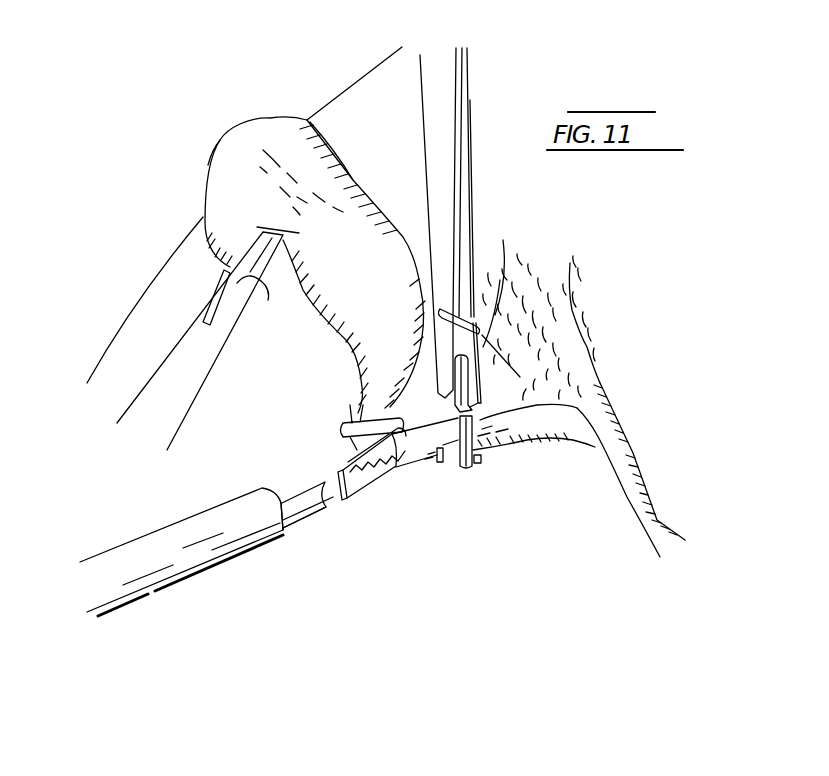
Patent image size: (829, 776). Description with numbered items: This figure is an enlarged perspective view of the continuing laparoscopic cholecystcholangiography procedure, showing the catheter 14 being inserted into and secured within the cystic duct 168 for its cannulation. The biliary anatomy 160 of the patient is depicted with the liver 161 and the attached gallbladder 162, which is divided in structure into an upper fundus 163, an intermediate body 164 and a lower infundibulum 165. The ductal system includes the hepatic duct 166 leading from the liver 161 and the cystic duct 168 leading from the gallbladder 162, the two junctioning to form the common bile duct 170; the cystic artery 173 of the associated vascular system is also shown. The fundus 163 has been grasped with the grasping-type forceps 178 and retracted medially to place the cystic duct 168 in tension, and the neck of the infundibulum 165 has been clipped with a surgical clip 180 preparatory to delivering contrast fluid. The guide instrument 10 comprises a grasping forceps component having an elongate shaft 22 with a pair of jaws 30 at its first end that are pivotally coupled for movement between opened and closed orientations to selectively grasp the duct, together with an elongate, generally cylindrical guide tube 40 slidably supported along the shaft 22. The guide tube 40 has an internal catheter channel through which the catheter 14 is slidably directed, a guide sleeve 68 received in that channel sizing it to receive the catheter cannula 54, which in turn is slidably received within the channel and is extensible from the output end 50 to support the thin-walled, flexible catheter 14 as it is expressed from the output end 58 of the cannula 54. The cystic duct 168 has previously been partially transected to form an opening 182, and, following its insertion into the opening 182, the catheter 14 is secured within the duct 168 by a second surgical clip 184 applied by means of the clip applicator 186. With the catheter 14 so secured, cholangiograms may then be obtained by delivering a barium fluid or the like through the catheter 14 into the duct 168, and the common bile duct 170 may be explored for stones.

The guide instrument 10 is at (157, 530).
The catheter 14 is at (435, 455).
The elongate shaft 22 is at (303, 485).
The pair of jaws 30 is at (337, 462).
The guide tube 40 is at (152, 588).
The output end 50 is at (288, 537).
The catheter cannula 54 is at (373, 482).
The output end 58 is at (397, 470).
The guide sleeve 68 is at (312, 510).
The biliary anatomy 160 is at (243, 111).
The liver 161 is at (158, 298).
The gallbladder 162 is at (323, 331).
The fundus 163 is at (235, 153).
The body 164 is at (336, 192).
The infundibulum 165 is at (392, 302).
The hepatic duct 166 is at (560, 323).
The cystic duct 168 is at (547, 442).
The common bile duct 170 is at (653, 507).
The cystic artery 173 is at (500, 280).
The grasping-type forceps 178 is at (153, 412).
The surgical clip 180 is at (345, 420).
The opening 182 is at (447, 455).
The second surgical clip 184 is at (482, 455).
The clip applicator 186 is at (452, 82).